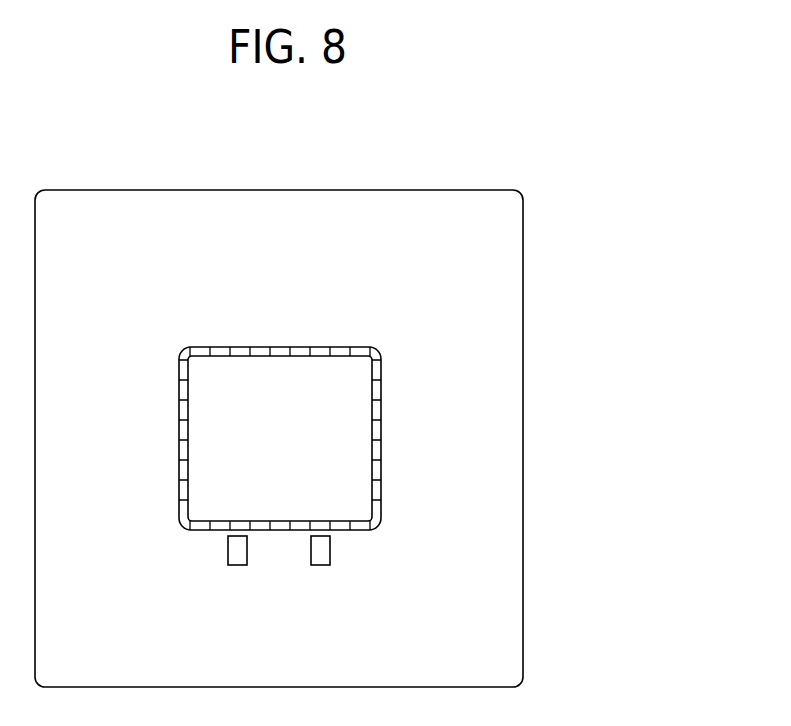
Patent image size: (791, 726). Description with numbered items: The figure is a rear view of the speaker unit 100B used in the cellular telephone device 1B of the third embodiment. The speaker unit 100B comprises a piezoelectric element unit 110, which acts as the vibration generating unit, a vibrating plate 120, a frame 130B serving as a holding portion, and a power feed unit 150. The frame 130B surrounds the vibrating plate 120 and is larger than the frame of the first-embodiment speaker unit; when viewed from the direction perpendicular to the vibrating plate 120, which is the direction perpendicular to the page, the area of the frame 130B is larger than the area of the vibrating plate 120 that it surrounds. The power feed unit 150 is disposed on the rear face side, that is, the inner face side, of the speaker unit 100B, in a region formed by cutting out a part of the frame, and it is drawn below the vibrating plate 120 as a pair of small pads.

The cellular telephone device 1B is at (593, 146).
The speaker unit 100B is at (563, 258).
The frame 130B is at (508, 455).
The vibrating plate 120 is at (358, 424).
The piezoelectric element unit 110 is at (290, 470).
The power feed unit 150 is at (321, 550).